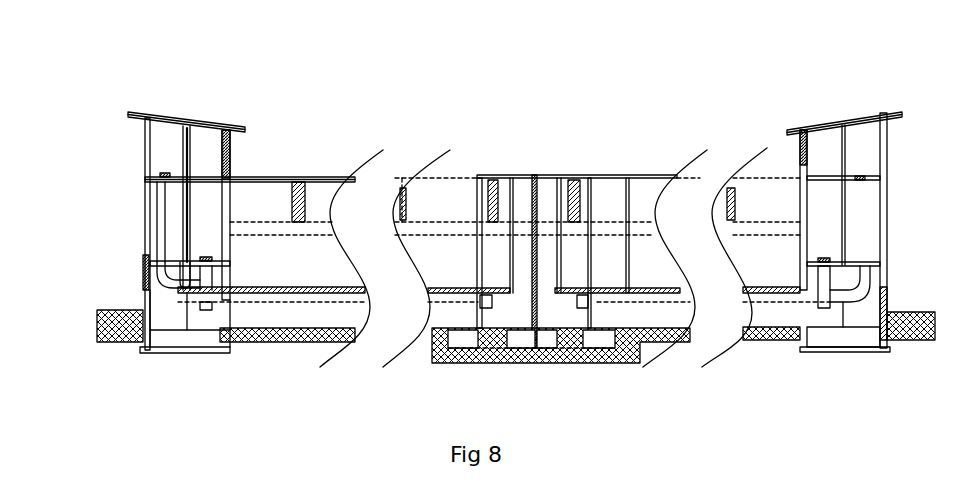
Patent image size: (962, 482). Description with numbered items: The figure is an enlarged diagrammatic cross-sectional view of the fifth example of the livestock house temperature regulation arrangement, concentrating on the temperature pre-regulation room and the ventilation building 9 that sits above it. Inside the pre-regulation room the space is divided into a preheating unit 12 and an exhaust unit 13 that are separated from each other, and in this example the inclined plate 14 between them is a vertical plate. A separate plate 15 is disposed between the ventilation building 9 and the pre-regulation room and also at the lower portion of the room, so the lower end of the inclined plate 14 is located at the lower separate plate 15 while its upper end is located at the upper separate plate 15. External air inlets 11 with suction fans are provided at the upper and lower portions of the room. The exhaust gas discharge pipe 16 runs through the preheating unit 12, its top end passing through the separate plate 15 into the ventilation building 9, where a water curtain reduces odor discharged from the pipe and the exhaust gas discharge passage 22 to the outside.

The ventilation building 9 is at (168, 133).
The separate plate 15 is at (186, 197).
The inclined plate 14 is at (208, 210).
The exhaust unit 13 is at (238, 175).
The exhaust gas discharge pipe 16 is at (165, 212).
The external air inlet 11 is at (147, 272).
The preheating unit 12 is at (132, 330).
The exhaust gas discharge passage 22 is at (302, 298).